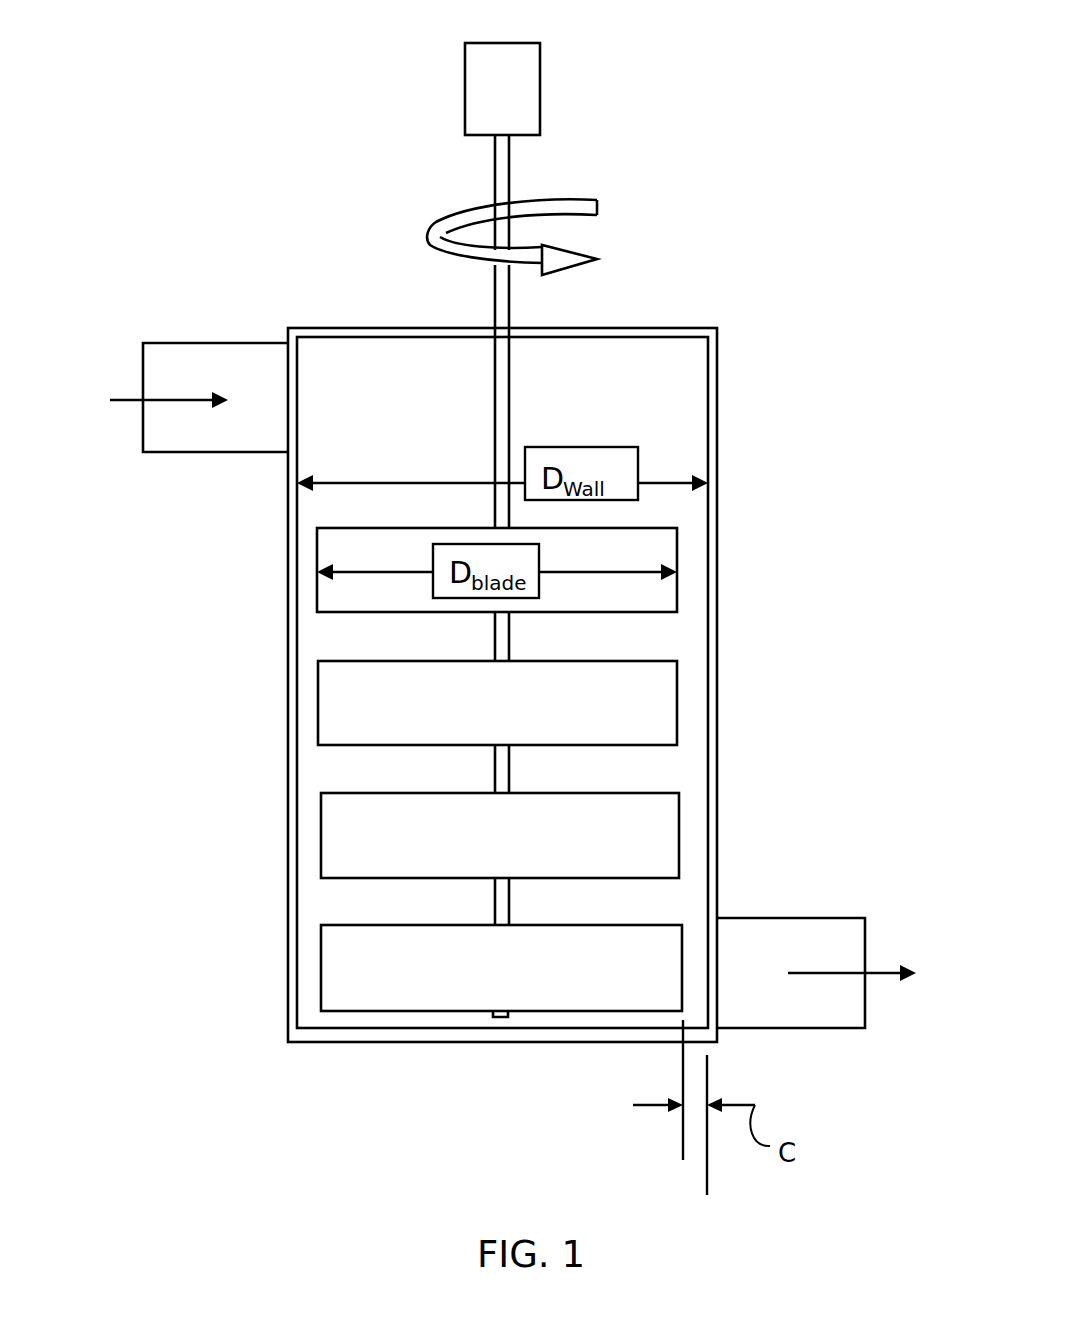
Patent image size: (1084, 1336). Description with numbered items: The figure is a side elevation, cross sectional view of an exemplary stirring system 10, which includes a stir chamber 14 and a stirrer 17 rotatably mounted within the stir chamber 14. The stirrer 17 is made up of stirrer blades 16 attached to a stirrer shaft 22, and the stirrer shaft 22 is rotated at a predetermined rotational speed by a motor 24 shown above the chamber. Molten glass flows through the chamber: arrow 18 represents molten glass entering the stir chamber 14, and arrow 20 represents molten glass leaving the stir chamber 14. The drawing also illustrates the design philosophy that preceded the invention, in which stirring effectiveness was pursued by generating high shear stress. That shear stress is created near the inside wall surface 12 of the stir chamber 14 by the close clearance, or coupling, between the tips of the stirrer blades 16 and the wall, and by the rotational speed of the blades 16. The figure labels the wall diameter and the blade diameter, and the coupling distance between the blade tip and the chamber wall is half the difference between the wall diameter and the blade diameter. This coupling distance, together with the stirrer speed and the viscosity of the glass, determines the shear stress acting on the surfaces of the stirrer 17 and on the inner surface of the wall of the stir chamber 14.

The stirring system 10 is at (780, 85).
The inside wall surface 12 is at (709, 432).
The stir chamber 14 is at (725, 380).
The stirrer blades 16 is at (370, 1011).
The stirrer 17 is at (682, 642).
The arrow 18 is at (131, 400).
The arrow 20 is at (877, 968).
The stirrer shaft 22 is at (494, 167).
The motor 24 is at (540, 84).